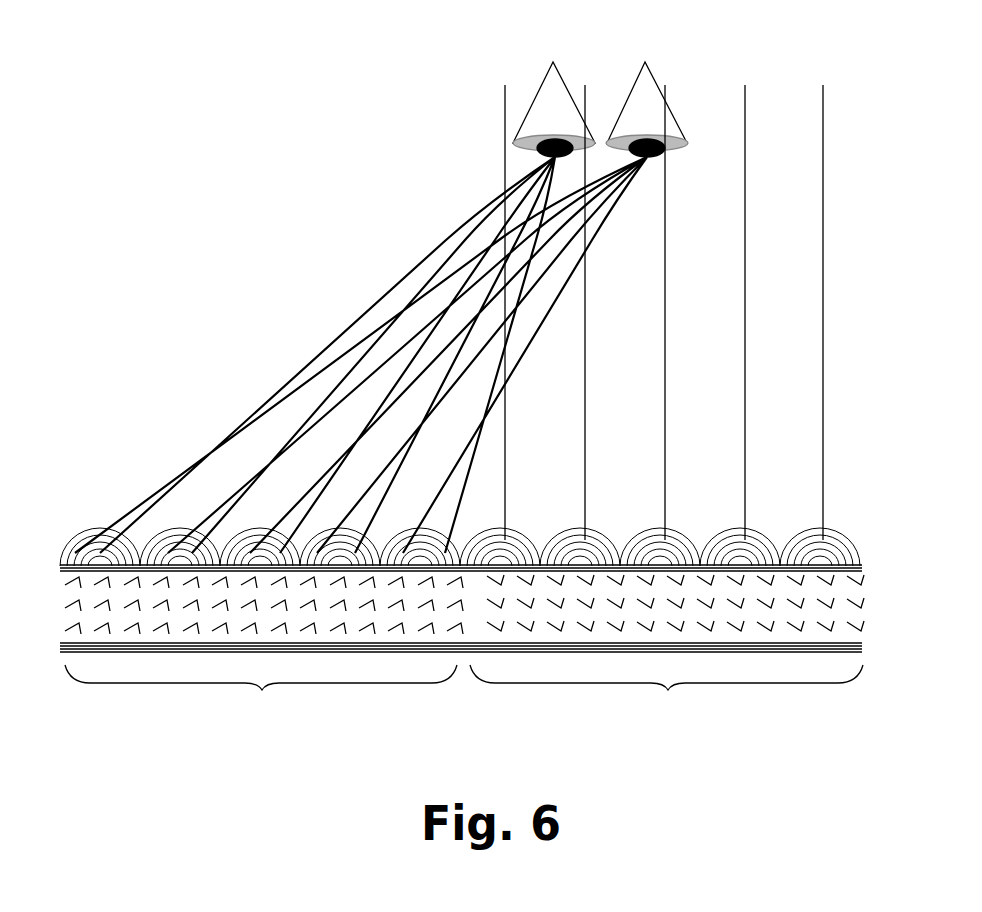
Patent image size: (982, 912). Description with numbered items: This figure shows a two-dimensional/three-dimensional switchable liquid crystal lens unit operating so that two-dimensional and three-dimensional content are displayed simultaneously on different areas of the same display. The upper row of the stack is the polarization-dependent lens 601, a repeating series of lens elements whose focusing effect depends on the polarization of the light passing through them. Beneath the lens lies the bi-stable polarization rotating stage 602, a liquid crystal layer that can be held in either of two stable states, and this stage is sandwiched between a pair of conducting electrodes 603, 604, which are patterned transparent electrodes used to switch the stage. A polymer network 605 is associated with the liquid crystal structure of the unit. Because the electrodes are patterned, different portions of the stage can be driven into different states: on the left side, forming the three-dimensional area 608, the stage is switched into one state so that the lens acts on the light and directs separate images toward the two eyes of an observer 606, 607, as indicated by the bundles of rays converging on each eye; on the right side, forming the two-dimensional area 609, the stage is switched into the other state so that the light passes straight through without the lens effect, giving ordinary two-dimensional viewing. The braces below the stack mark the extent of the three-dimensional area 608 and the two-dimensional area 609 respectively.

The polarization-dependent lens 601 is at (605, 537).
The bi-stable polarization rotating stage 602 is at (855, 610).
The conducting electrode 603 is at (857, 568).
The conducting electrode 604 is at (857, 645).
The polymer network 605 is at (763, 538).
The eye of an observer 606 is at (563, 73).
The eye of an observer 607 is at (658, 85).
The 3D area 608 is at (262, 690).
The 2D area 609 is at (668, 690).